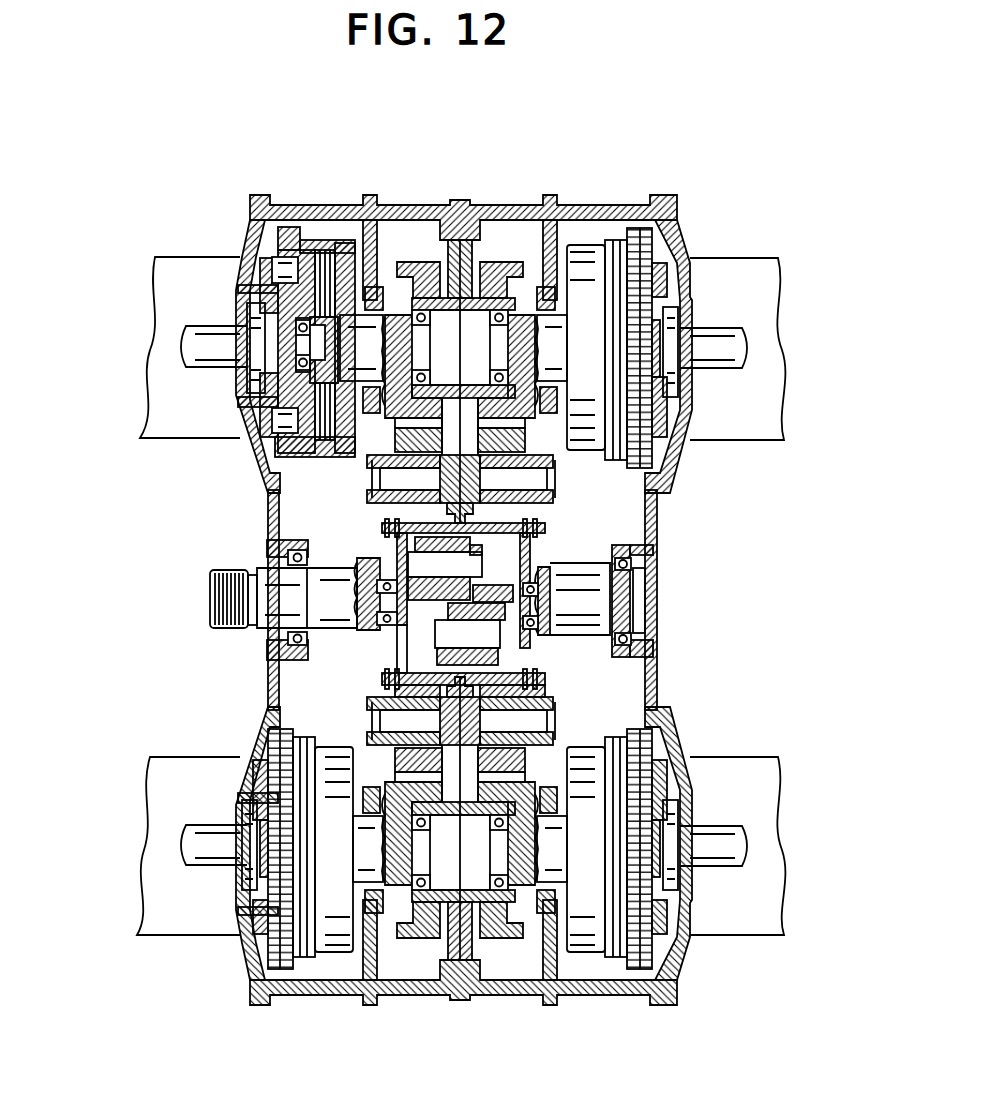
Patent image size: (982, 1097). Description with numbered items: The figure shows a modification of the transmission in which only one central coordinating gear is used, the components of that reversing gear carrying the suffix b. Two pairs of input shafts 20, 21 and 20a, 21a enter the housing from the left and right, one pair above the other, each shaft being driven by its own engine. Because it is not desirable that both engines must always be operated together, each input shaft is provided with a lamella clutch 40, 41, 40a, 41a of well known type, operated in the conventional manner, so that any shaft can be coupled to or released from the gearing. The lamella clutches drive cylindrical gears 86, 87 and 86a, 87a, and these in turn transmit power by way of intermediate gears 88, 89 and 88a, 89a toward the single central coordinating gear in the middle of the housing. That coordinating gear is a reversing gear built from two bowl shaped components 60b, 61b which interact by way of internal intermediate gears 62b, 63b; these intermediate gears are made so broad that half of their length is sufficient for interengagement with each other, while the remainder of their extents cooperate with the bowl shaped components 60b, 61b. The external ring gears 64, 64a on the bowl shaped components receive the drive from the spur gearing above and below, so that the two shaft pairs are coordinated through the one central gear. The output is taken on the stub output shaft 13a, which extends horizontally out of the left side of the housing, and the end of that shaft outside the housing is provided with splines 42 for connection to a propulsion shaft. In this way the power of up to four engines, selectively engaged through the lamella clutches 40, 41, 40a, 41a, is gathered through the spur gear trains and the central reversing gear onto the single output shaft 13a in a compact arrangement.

The input shaft 20 is at (215, 345).
The input shaft 21 is at (725, 345).
The input shaft 20a is at (195, 838).
The input shaft 21a is at (735, 845).
The lamella clutch 40 is at (340, 243).
The lamella clutch 41 is at (627, 250).
The lamella clutch 40a is at (330, 935).
The lamella clutch 41a is at (590, 940).
The cylindrical gear 86 is at (428, 262).
The cylindrical gear 86a is at (430, 965).
The cylindrical gear 87 is at (505, 272).
The cylindrical gear 87a is at (500, 978).
The intermediate gear 88 is at (397, 503).
The intermediate gear 89 is at (520, 508).
The intermediate gear 88a is at (395, 702).
The intermediate gear 89a is at (520, 700).
The external ring gear 64 is at (385, 528).
The external ring gear 64a is at (545, 682).
The intermediate gear 62b is at (465, 548).
The intermediate gear 63b is at (533, 652).
The bowl shaped component 60b is at (388, 652).
The bowl shaped component 61b is at (635, 553).
The output shaft 13a is at (338, 583).
The splines 42 is at (225, 598).